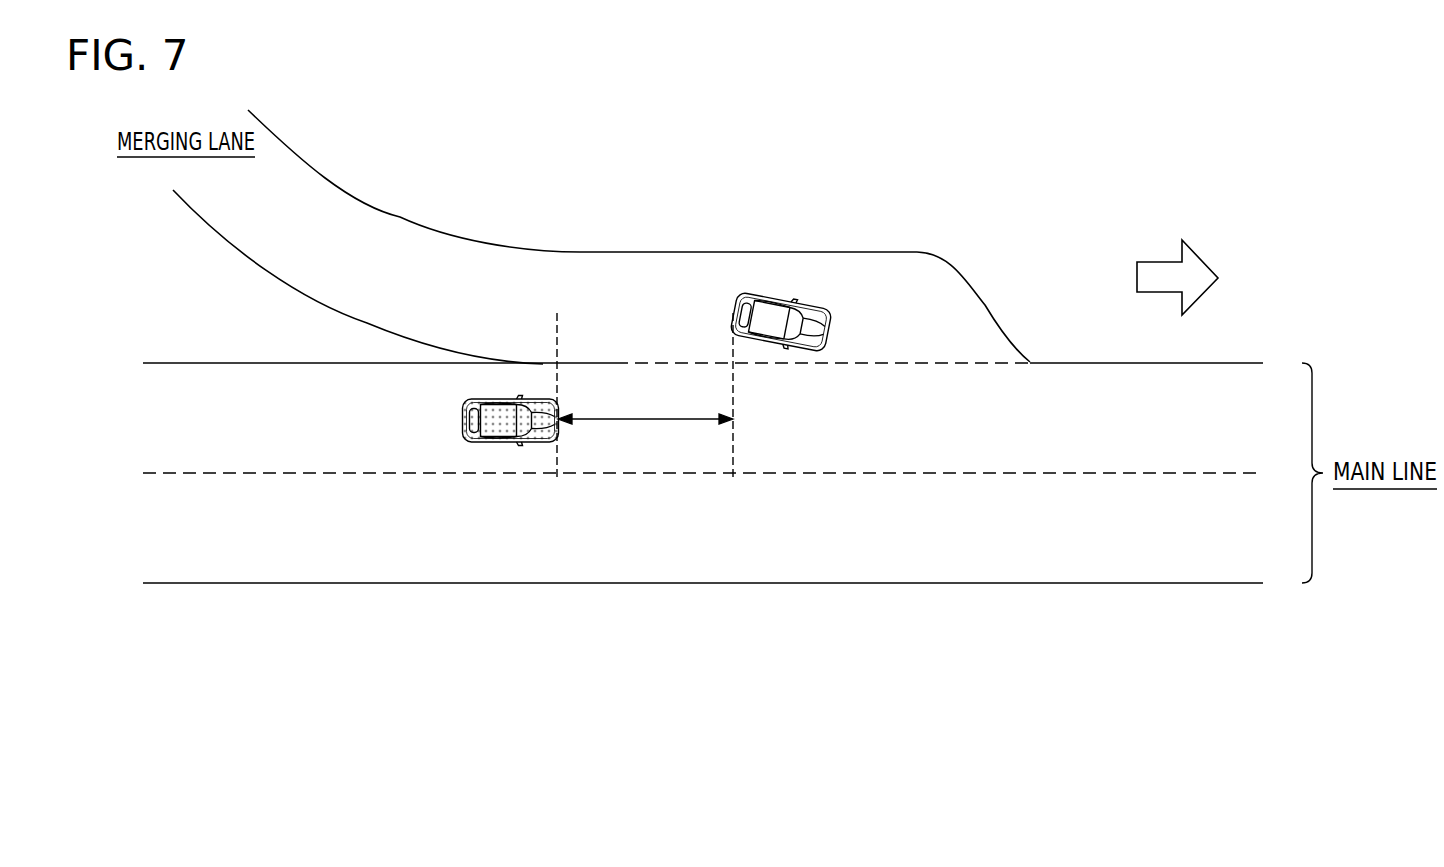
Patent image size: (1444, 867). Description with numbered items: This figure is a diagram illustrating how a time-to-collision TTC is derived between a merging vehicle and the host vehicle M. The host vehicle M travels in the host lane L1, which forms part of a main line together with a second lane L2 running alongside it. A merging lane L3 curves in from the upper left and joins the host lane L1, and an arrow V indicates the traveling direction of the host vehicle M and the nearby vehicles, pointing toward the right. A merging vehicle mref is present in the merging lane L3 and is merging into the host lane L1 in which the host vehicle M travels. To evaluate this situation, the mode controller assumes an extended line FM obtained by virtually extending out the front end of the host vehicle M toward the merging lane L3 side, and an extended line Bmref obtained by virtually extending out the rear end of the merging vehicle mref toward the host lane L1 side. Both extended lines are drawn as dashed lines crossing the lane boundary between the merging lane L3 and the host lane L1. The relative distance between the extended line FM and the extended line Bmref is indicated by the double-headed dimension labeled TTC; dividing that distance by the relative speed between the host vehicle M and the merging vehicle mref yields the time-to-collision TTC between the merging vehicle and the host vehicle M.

The host vehicle M is at (463, 420).
The merging vehicle mref is at (831, 331).
The extended line FM is at (556, 380).
The extended line Bmref is at (732, 413).
The time-to-collision TTC is at (645, 403).
The host lane L1 is at (1270, 433).
The lane L2 is at (1270, 545).
The merging lane L3 is at (300, 227).
The traveling direction V is at (1137, 275).